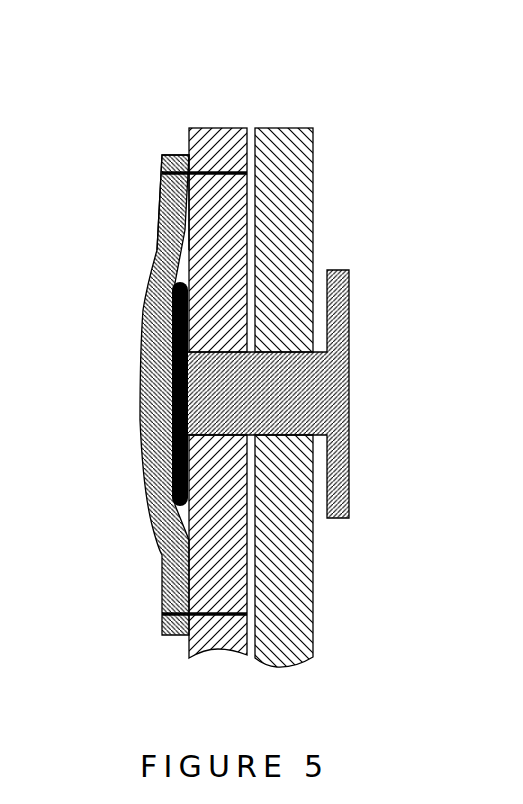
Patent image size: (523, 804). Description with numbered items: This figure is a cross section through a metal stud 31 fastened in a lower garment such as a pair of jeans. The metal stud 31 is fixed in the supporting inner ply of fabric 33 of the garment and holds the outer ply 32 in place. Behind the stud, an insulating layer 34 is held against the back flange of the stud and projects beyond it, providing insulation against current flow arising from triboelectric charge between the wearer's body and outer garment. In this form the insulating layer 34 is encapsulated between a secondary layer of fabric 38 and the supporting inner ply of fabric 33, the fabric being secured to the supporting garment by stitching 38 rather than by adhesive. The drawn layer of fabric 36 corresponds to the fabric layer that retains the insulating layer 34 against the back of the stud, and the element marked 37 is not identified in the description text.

The metal stud 31 is at (350, 355).
The outer ply 32 is at (315, 153).
The supporting inner ply of fabric 33 is at (233, 128).
The insulating layer 34 is at (157, 537).
The layer of fabric 36 is at (140, 387).
The bonding layer 37 is at (162, 174).
The layer of fabric / stitching 38 is at (160, 158).